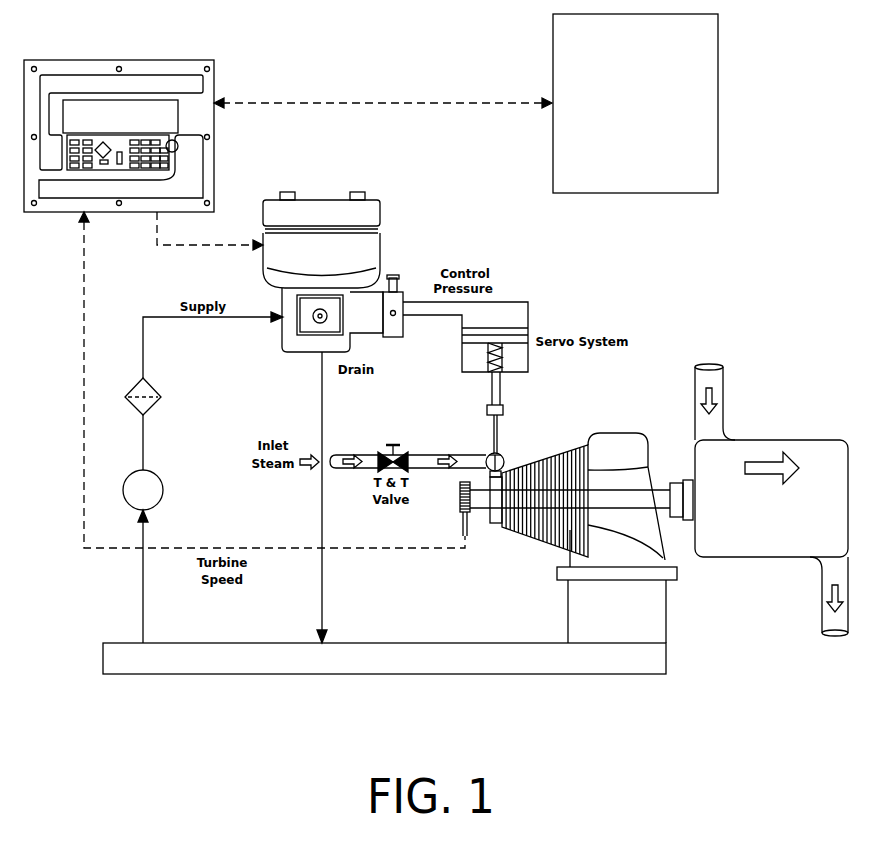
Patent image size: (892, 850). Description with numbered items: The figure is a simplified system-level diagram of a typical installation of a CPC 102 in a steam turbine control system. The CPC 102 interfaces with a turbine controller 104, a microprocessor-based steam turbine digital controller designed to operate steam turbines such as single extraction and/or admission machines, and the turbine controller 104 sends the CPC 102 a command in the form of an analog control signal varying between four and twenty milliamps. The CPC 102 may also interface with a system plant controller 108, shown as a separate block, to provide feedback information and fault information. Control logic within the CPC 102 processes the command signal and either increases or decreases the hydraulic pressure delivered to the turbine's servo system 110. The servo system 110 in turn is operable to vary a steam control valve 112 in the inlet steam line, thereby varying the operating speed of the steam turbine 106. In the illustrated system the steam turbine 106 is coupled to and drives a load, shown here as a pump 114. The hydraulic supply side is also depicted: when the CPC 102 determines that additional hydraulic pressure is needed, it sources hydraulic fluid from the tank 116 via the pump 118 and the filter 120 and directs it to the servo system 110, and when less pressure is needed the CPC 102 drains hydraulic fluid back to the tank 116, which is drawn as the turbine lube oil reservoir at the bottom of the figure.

The CPC 102 is at (380, 210).
The turbine controller 104 is at (188, 60).
The steam turbine 106 is at (612, 433).
The system plant controller 108 is at (718, 57).
The servo system 110 is at (528, 313).
The steam control valve 112 is at (500, 455).
The pump 114 is at (800, 440).
The tank 116 is at (672, 660).
The pump 118 is at (163, 490).
The filter 120 is at (150, 386).